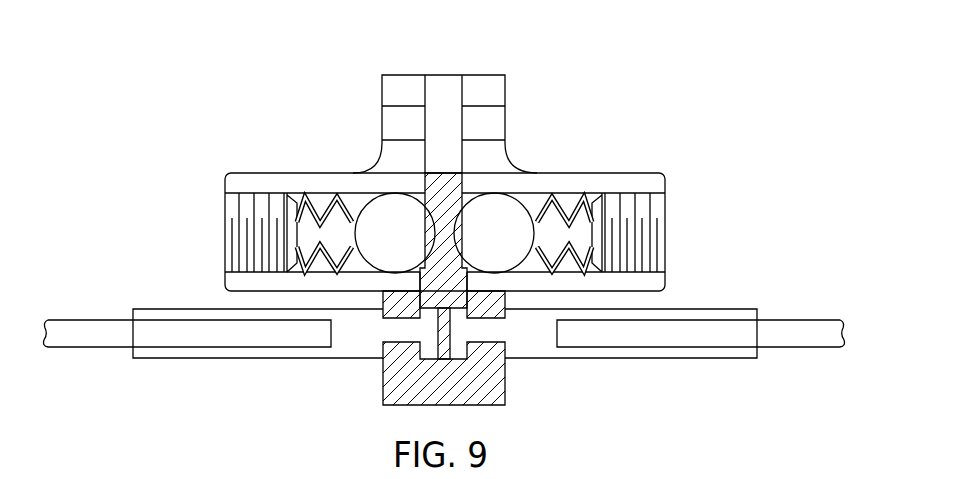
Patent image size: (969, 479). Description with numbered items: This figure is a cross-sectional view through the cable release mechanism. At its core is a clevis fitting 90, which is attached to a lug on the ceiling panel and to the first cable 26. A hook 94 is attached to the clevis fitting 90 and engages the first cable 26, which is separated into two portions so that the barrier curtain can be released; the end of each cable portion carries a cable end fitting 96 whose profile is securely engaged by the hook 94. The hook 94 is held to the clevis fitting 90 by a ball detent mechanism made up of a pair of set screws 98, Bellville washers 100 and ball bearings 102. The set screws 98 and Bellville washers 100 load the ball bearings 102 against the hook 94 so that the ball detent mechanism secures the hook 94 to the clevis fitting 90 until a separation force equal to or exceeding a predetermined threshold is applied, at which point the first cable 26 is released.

The clevis fitting 90 is at (516, 58).
The set screws 98 is at (665, 229).
The ball bearings 102 is at (498, 207).
The Bellville washers 100 is at (557, 200).
The hook 94 is at (505, 404).
The cable end fitting 96 is at (353, 343).
The first cable 26 is at (100, 337).